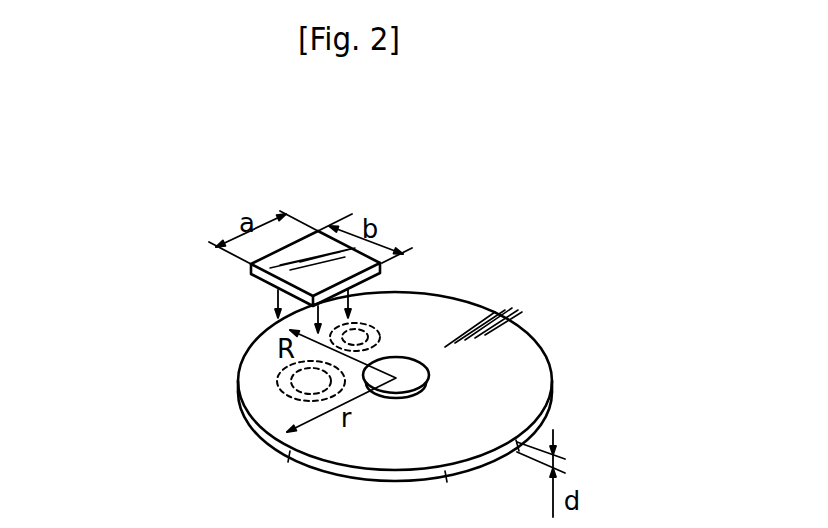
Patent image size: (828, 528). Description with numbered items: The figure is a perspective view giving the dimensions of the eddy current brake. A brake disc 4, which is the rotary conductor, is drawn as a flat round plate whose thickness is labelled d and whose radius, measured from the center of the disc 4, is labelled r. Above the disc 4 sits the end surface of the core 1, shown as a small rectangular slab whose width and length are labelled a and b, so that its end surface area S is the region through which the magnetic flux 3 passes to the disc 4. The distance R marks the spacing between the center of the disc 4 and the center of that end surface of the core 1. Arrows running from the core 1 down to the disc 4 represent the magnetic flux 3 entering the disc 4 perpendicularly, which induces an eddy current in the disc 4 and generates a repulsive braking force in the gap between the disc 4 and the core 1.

The core 1 is at (313, 290).
The magnetic flux 3 is at (277, 295).
The brake disc 4 is at (433, 313).